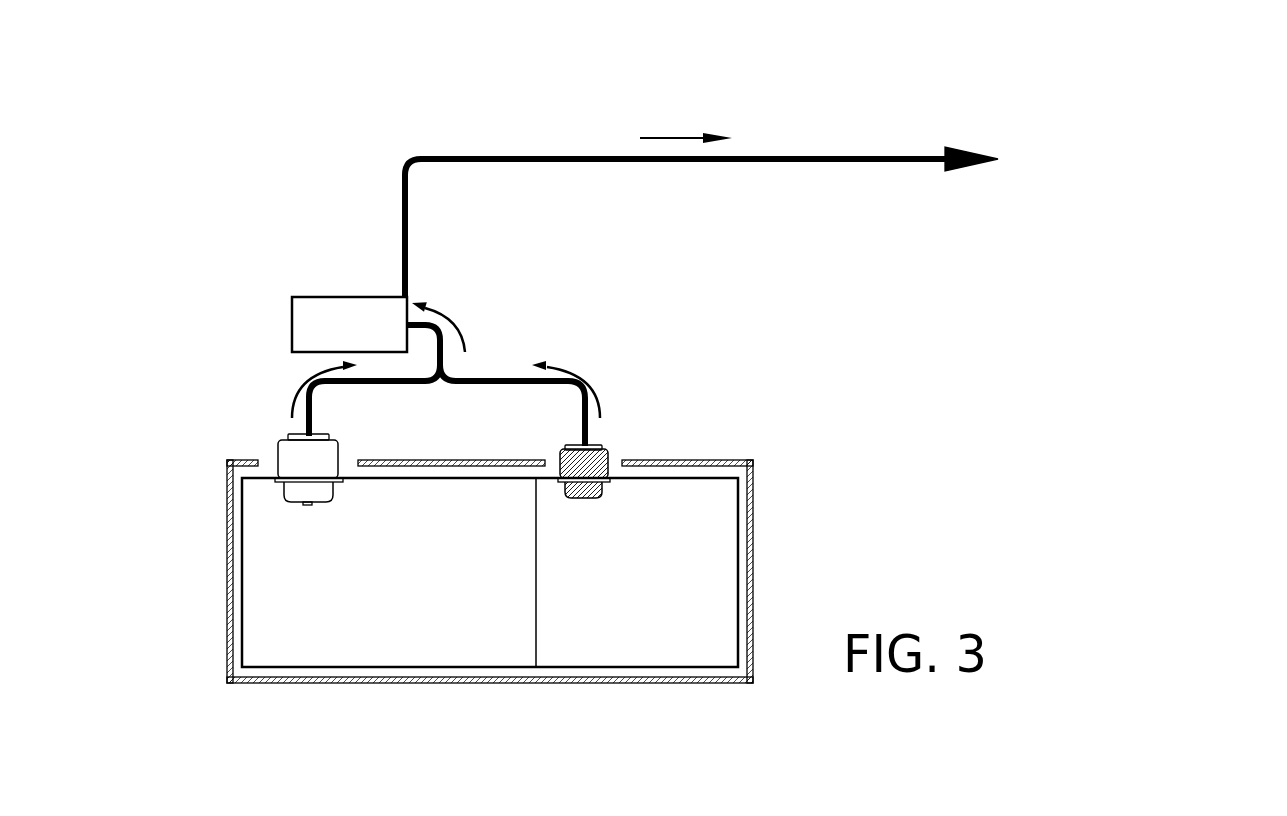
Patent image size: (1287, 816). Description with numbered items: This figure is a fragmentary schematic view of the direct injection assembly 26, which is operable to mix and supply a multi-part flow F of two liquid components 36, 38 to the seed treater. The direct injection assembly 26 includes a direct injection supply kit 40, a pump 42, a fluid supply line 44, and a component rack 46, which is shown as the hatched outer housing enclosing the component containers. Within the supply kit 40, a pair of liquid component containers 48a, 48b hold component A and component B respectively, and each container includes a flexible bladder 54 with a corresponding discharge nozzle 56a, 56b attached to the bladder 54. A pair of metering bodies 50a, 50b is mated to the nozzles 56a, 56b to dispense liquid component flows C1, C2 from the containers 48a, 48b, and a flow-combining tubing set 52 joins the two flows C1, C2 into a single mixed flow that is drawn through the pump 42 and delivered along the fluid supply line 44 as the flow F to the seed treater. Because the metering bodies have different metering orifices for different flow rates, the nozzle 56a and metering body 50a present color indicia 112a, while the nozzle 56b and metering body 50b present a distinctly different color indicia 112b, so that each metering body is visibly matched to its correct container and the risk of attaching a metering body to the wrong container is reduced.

The direct injection assembly 26 is at (152, 156).
The liquid component 36 is at (403, 615).
The liquid component 38 is at (652, 615).
The direct injection supply kit 40 is at (572, 609).
The pump 42 is at (316, 297).
The fluid supply line 44 is at (497, 158).
The component rack 46 is at (717, 685).
The liquid component container 48a is at (307, 667).
The liquid component container 48b is at (623, 667).
The metering body 50a is at (337, 447).
The metering body 50b is at (565, 450).
The flow-combining tubing set 52 is at (502, 378).
The flexible bladder 54 is at (580, 667).
The discharge nozzle 56a is at (332, 500).
The discharge nozzle 56b is at (600, 497).
The color indicia 112a is at (278, 471).
The color indicia 112b is at (614, 467).
The multi-part flow F is at (673, 137).
The liquid component flow C1 is at (302, 383).
The liquid component flow C2 is at (593, 383).